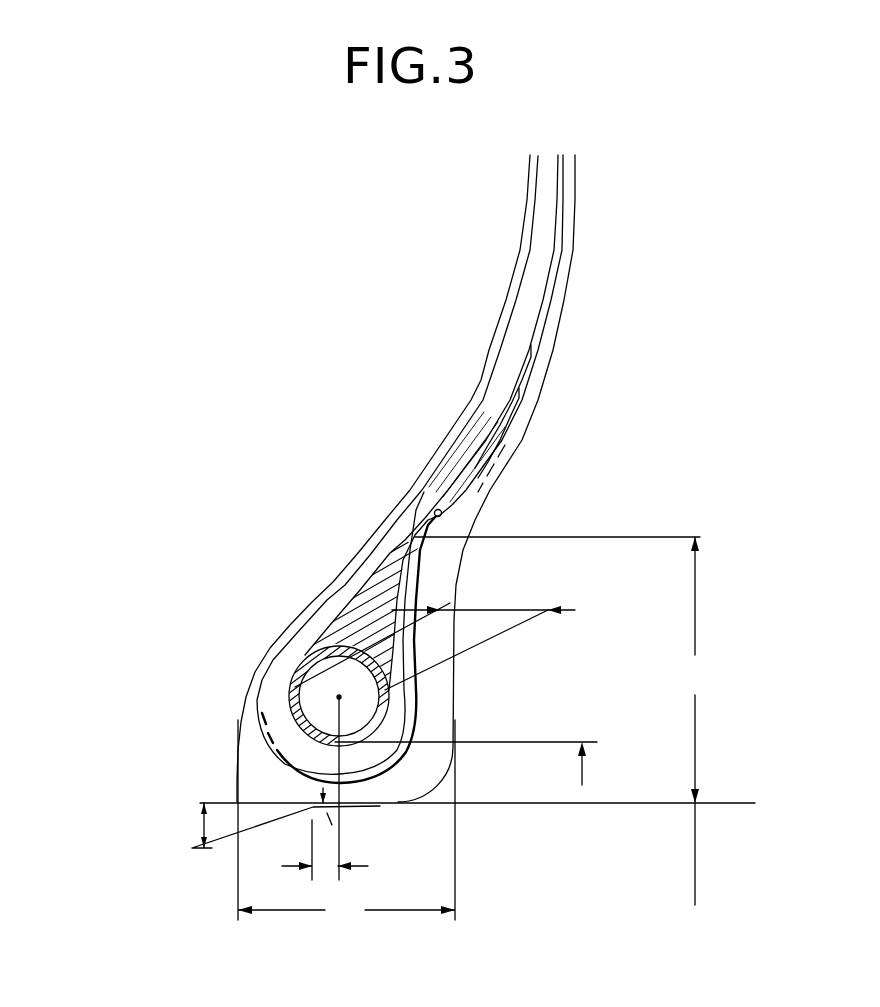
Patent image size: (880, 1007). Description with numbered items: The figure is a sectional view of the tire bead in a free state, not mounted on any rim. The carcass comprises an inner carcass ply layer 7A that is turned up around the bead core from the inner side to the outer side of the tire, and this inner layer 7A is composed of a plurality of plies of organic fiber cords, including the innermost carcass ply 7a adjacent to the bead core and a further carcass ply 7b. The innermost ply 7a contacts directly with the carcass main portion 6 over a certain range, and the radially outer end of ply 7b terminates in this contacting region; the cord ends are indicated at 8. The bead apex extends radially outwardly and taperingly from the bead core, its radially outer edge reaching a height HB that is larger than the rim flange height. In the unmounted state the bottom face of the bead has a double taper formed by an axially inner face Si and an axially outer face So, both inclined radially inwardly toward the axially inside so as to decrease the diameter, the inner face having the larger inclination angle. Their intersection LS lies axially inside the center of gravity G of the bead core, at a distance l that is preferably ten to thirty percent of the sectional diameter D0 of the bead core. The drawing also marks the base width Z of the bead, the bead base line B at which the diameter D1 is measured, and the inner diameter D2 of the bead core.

The inner carcass ply layer 7A is at (471, 398).
The innermost carcass ply 7a is at (536, 353).
The carcass ply 7b is at (521, 398).
The reinforcing layer 8 is at (488, 464).
The carcass main portion 6 is at (432, 497).
The center of gravity of the bead core G is at (339, 697).
The sectional diameter of the bead core D0 is at (435, 628).
The height of the bead apex HB is at (567, 721).
The inner diameter of the bead core D2 is at (486, 768).
The diameter at the bead base line D1 is at (730, 857).
The base width of the bead Z is at (346, 824).
The distance l is at (325, 834).
The axially inner face Si is at (257, 833).
The intersection between the inner and outer faces LS is at (313, 808).
The axially outer face So is at (380, 806).
The bead base line B is at (567, 805).